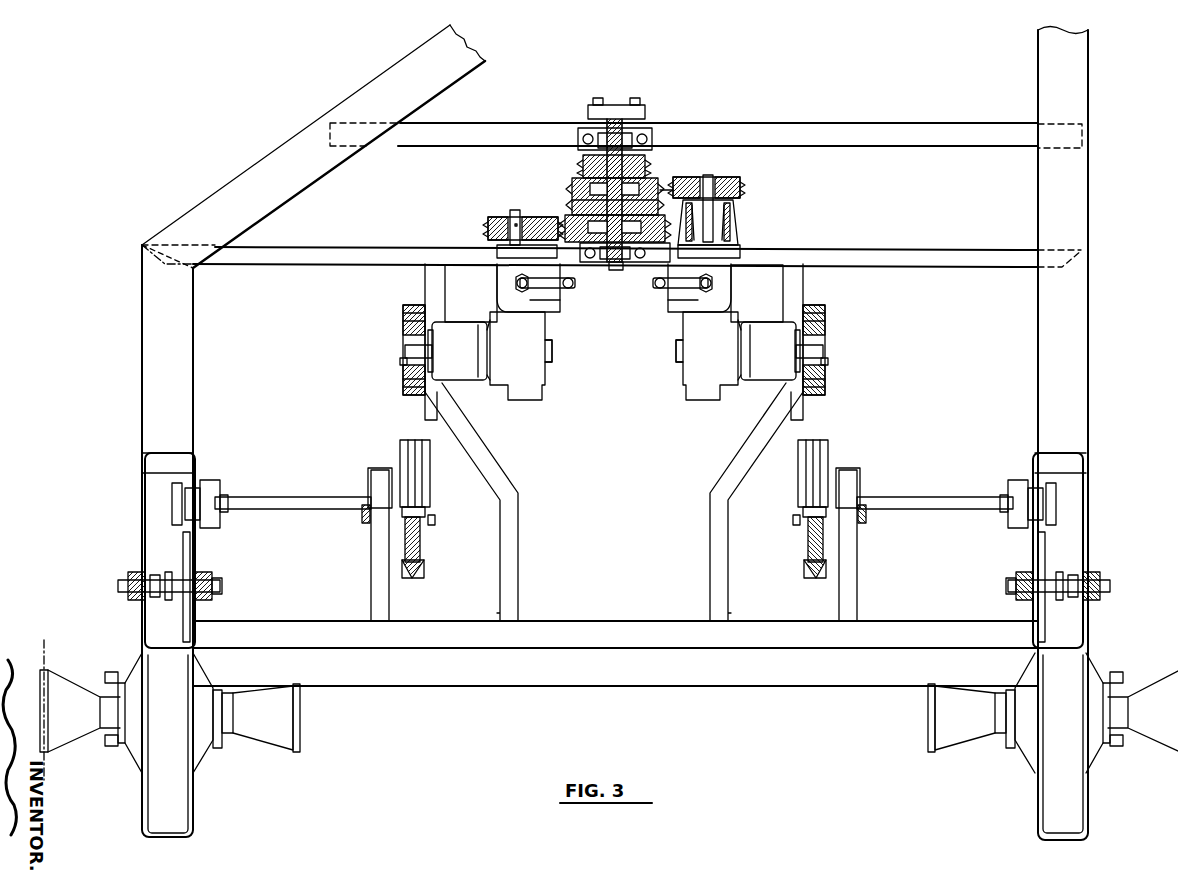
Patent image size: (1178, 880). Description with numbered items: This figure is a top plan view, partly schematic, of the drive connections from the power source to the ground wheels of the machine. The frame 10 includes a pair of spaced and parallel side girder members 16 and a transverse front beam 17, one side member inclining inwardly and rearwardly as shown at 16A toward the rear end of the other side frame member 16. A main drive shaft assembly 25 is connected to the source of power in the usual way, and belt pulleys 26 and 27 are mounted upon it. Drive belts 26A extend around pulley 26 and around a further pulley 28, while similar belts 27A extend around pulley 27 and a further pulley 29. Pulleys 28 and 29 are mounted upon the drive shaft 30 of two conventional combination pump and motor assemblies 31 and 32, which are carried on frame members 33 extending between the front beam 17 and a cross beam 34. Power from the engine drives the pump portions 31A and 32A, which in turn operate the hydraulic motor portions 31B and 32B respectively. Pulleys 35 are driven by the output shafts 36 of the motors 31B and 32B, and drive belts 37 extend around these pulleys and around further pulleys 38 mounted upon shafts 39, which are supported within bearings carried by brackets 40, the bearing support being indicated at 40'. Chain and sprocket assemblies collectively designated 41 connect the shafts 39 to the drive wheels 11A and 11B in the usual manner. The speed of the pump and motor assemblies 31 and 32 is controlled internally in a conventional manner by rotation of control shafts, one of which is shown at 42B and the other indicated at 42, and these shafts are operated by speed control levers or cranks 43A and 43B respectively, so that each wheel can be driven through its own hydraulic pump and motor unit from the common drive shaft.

The frame 10 is at (1092, 405).
The drive wheel 11A is at (1177, 656).
The drive wheel 11B is at (44, 651).
The side girder member 16 is at (142, 315).
The inclined side member portion 16A is at (431, 97).
The transverse front beam 17 is at (660, 688).
The main drive shaft assembly 25 is at (615, 108).
The belt pulley 26 is at (580, 178).
The drive belts 26A is at (737, 176).
The belt pulley 27 is at (578, 217).
The belts 27A is at (488, 227).
The pulley 28 is at (673, 186).
The pulley 29 is at (518, 216).
The drive shaft 30 is at (512, 222).
The combination pump and motor assembly 31 is at (672, 318).
The pump portion 31A is at (672, 277).
The hydraulic motor portion 31B is at (684, 365).
The combination pump and motor assembly 32 is at (557, 318).
The pump portion 32A is at (500, 277).
The hydraulic motor portion 32B is at (546, 358).
The frame members 33 is at (465, 432).
The cross beam 34 is at (328, 246).
The pulleys 35 is at (405, 325).
The output shafts 36 is at (410, 351).
The drive belts 37 is at (420, 580).
The pulleys 38 is at (430, 480).
The shafts 39 is at (285, 500).
The brackets 40 is at (614, 587).
The bearing support post 40' is at (620, 544).
The chain and sprocket assemblies 41 is at (155, 522).
The pivot pin 42 is at (706, 291).
The control shaft 42B is at (521, 291).
The speed control lever or crank 43A is at (744, 290).
The speed control lever or crank 43B is at (572, 289).